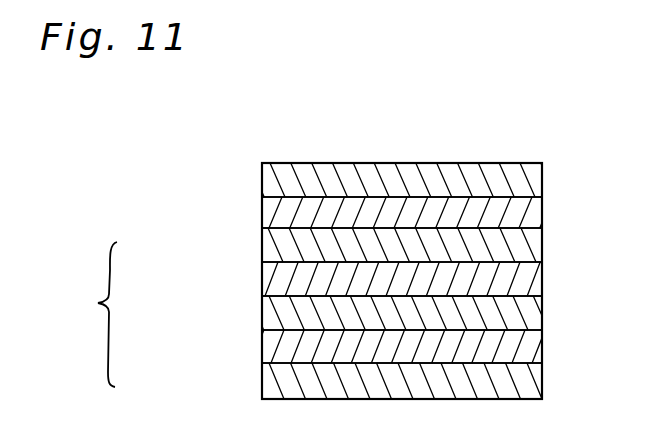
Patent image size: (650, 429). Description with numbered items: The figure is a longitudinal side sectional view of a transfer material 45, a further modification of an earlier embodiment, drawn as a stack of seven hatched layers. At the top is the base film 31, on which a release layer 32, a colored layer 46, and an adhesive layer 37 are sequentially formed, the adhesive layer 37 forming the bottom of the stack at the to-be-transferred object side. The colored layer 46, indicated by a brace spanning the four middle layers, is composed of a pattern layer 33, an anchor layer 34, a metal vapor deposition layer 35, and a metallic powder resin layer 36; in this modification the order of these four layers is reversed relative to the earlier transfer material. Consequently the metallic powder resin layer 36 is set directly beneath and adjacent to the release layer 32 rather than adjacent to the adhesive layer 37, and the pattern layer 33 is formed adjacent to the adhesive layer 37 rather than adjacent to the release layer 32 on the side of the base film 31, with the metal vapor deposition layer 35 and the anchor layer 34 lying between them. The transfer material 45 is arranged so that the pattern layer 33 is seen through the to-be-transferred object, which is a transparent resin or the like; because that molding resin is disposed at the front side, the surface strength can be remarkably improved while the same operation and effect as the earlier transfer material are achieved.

The transfer material 45 is at (411, 140).
The colored layer 46 is at (82, 314).
The base film 31 is at (260, 177).
The release layer 32 is at (260, 213).
The pattern layer 33 is at (260, 347).
The anchor layer 34 is at (260, 312).
The metal vapor deposition layer 35 is at (260, 280).
The metallic powder resin layer 36 is at (260, 247).
The adhesive layer 37 is at (260, 388).